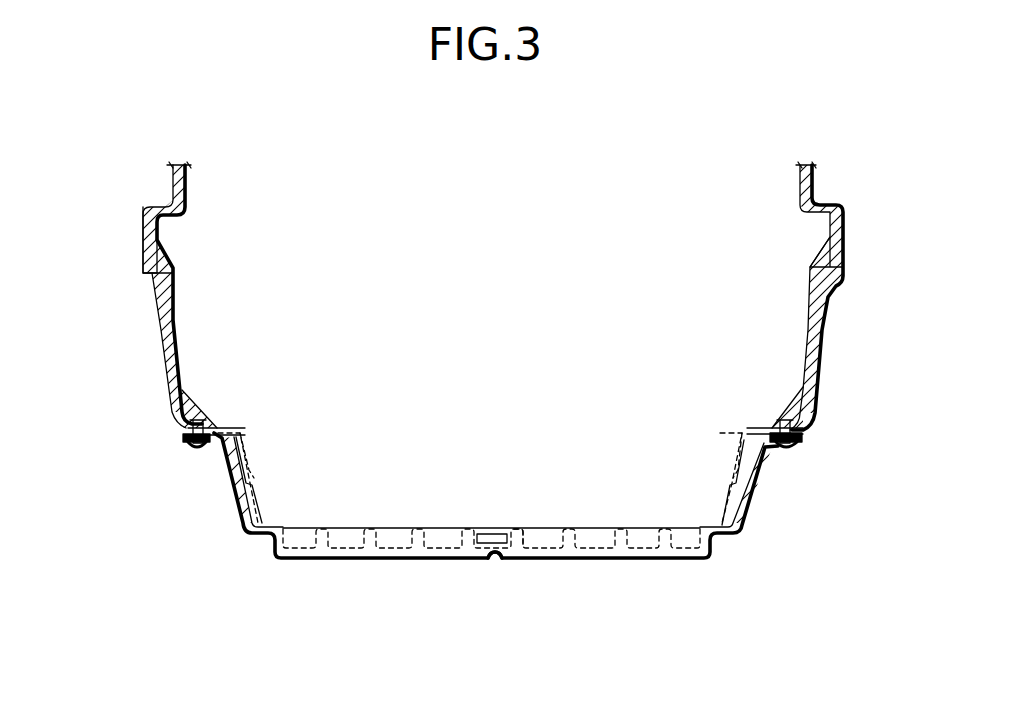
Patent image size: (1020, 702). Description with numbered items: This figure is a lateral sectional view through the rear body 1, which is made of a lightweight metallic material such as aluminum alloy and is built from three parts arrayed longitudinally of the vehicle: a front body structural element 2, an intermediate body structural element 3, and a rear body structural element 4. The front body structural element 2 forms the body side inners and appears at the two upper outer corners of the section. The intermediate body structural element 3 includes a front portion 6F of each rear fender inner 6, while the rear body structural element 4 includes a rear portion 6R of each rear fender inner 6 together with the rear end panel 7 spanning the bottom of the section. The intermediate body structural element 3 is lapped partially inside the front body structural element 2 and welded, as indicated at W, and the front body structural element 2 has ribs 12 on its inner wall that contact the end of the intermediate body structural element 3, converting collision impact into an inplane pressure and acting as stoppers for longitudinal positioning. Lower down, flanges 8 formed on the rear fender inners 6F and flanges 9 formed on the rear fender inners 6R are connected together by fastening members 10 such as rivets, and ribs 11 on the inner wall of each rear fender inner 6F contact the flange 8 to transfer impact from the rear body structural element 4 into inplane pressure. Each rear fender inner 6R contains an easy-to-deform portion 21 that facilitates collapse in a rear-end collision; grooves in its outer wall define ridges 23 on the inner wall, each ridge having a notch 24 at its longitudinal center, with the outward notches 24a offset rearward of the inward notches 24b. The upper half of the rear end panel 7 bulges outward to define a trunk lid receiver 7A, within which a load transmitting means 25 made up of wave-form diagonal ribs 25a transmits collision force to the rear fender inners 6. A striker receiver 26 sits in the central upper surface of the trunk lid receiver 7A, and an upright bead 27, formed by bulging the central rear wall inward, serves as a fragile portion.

The rear body 1 is at (818, 148).
The front body structural element 2 is at (125, 190).
The intermediate body structural element 3 is at (132, 295).
The rear body structural element 4 is at (463, 584).
The rear fender inner 6 is at (132, 295).
The front portion of rear fender inner 6F is at (170, 372).
The rear portion of rear fender inner 6R is at (236, 510).
The rear end panel 7 is at (491, 580).
The trunk lid receiver 7A is at (420, 562).
The flange 8 is at (230, 428).
The flange 9 is at (172, 448).
The fastening member 10 is at (186, 420).
The rib 11 is at (190, 398).
The rib 12 is at (164, 258).
The easy-to-deform portion 21 is at (510, 507).
The ridge 23 is at (245, 436).
The notch 24 is at (490, 461).
The outward notch 24a is at (255, 480).
The inward notch 24b is at (248, 468).
The load transmitting means 25 is at (440, 520).
The diagonal rib 25a is at (524, 535).
The striker receiver 26 is at (496, 533).
The upright bead 27 is at (495, 562).
The weld W is at (141, 287).